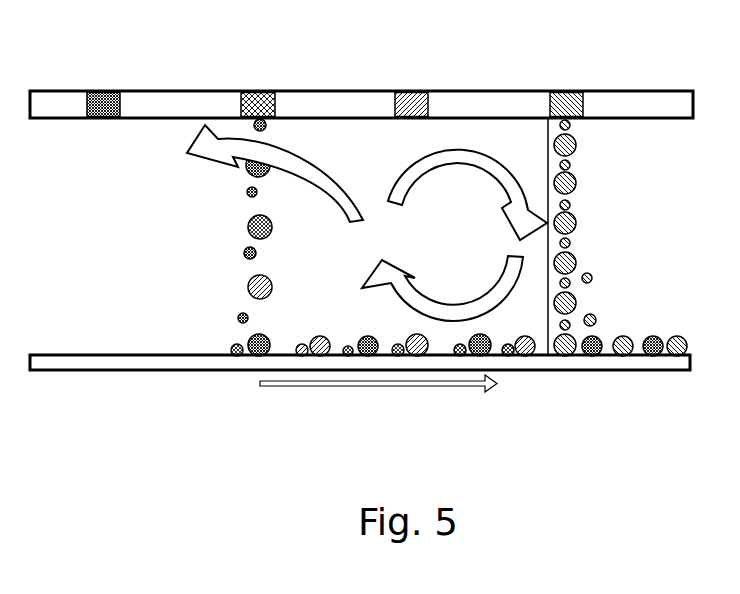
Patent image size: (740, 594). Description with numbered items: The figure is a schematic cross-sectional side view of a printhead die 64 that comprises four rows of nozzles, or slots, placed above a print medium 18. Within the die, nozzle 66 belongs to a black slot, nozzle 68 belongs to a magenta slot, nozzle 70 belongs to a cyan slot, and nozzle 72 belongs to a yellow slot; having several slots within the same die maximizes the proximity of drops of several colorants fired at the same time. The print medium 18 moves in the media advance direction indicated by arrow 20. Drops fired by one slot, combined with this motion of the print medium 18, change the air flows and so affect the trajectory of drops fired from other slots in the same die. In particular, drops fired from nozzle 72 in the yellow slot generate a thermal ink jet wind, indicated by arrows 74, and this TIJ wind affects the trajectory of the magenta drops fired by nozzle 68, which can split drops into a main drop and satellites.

The print medium 18 is at (637, 370).
The arrow representing the media advance direction 20 is at (370, 390).
The printhead die 64 is at (361, 63).
The nozzle 66 is at (100, 91).
The nozzle 68 is at (255, 91).
The nozzle 70 is at (412, 91).
The nozzle 72 is at (568, 91).
The arrows 74 is at (310, 175).